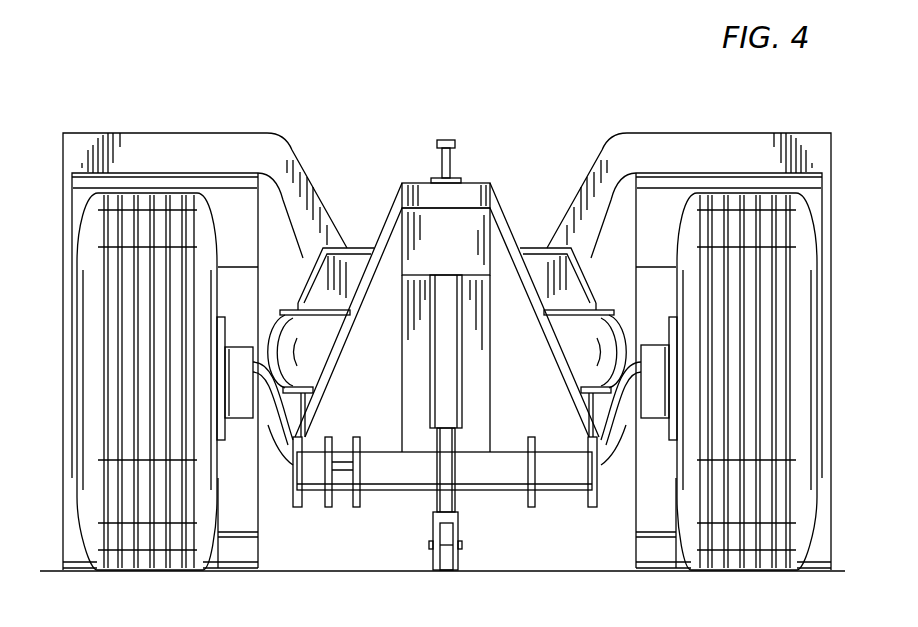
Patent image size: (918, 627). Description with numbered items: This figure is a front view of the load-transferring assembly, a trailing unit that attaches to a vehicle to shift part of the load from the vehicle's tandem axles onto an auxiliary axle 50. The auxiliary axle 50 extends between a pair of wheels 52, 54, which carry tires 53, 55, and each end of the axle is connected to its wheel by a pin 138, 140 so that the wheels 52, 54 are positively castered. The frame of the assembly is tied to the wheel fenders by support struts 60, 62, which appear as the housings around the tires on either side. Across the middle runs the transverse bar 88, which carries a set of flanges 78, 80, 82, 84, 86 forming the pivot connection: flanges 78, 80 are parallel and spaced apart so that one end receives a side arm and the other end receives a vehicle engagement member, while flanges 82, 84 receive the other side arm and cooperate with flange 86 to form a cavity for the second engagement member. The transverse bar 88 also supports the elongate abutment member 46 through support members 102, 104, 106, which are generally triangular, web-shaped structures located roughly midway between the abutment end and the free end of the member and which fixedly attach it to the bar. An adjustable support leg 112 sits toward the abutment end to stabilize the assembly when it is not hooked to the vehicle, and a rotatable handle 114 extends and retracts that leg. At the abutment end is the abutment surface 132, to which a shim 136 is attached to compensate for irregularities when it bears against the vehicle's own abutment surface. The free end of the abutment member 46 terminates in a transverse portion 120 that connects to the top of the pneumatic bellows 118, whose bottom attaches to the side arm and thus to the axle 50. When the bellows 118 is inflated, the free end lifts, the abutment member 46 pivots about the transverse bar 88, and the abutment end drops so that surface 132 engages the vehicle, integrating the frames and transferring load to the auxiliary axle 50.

The elongate abutment member 46 is at (447, 281).
The auxiliary axle 50 is at (603, 462).
The wheel 52 is at (668, 317).
The tire 53 is at (755, 543).
The wheel 54 is at (222, 327).
The tire 55 is at (158, 555).
The support strut 60 is at (651, 145).
The support strut 62 is at (237, 145).
The flange 78 is at (592, 507).
The flange 80 is at (531, 510).
The flange 82 is at (297, 510).
The flange 84 is at (357, 510).
The flange 86 is at (328, 510).
The transverse bar 88 is at (487, 490).
The support member 102 is at (502, 255).
The support member 104 is at (388, 272).
The support member 106 is at (475, 362).
The adjustable support leg 112 is at (437, 497).
The rotatable handle 114 is at (445, 135).
The bellows 118 is at (293, 325).
The transverse portion 120 is at (547, 245).
The abutment surface 132 is at (433, 227).
The shim 136 is at (472, 192).
The pin 138 is at (655, 420).
The pin 140 is at (245, 420).